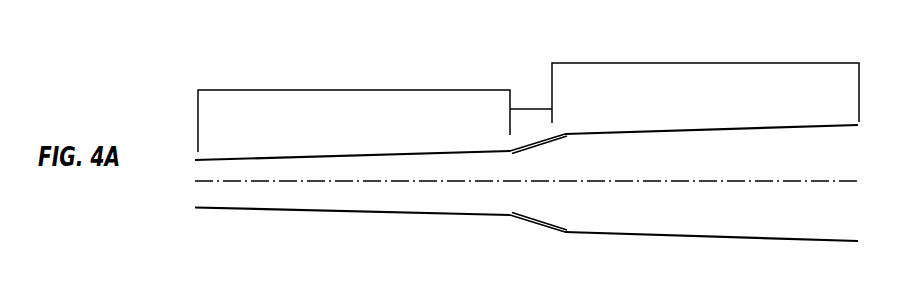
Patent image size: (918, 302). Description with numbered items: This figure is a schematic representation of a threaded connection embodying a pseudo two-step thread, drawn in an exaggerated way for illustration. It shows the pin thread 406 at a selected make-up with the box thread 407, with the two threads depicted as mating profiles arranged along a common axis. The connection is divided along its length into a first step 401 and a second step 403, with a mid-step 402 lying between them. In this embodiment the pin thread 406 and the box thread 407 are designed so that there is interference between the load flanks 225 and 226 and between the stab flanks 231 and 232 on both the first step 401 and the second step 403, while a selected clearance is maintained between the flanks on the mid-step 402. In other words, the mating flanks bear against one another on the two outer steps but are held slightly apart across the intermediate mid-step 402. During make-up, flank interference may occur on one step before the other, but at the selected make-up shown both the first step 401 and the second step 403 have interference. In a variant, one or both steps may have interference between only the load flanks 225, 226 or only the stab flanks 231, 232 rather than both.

The first step 401 is at (332, 89).
The mid-step 402 is at (535, 108).
The second step 403 is at (705, 63).
The pin thread 406 is at (626, 170).
The box thread 407 is at (401, 142).
The load flank 225 is at (832, 127).
The load flank 226 is at (766, 130).
The stab flank 231 is at (818, 240).
The stab flank 232 is at (789, 238).